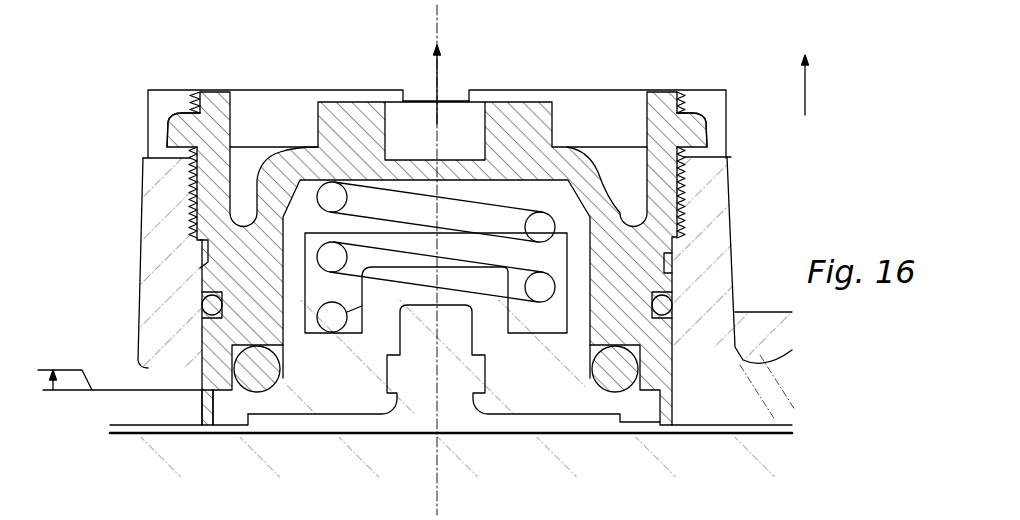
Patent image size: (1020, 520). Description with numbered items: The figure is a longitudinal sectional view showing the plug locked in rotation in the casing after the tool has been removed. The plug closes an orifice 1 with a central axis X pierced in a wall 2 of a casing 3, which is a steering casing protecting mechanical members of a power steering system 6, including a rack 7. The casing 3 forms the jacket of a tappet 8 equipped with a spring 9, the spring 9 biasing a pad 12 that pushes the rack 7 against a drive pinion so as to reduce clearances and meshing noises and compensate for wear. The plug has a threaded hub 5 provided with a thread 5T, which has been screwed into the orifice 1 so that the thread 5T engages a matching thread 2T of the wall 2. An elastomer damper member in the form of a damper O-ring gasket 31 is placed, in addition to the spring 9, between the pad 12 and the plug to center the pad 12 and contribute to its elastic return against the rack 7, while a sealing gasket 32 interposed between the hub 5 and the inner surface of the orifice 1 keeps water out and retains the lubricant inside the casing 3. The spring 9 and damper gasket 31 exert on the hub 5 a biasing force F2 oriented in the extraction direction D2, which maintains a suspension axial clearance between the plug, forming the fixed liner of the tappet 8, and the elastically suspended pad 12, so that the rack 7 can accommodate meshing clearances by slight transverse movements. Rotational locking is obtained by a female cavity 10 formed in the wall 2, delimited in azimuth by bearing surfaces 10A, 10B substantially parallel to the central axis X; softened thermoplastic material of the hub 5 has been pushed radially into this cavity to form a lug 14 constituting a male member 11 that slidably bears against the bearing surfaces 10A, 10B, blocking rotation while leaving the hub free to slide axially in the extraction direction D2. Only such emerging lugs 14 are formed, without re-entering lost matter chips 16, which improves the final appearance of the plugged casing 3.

The orifice 1 is at (636, 112).
The wall 2 is at (708, 242).
The matching thread of the wall 2T is at (688, 193).
The casing 3 is at (757, 393).
The threaded hub 5 is at (517, 117).
The thread of the hub 5T is at (688, 177).
The power steering system 6 is at (86, 301).
The rack 7 is at (707, 437).
The tappet 8 is at (573, 400).
The spring 9 is at (367, 205).
The female cavity 10 is at (172, 108).
The bearing surface 10A is at (697, 110).
The bearing surface 10B is at (163, 112).
The male member 11 is at (180, 135).
The pad 12 is at (230, 410).
The lug 14 is at (438, 135).
The lost matter chips 16 is at (232, 130).
The damper O-ring gasket 31 is at (627, 370).
The sealing gasket 32 is at (200, 305).
The biasing force F2 is at (438, 77).
The extraction direction D2 is at (806, 93).
The central axis X is at (438, 260).